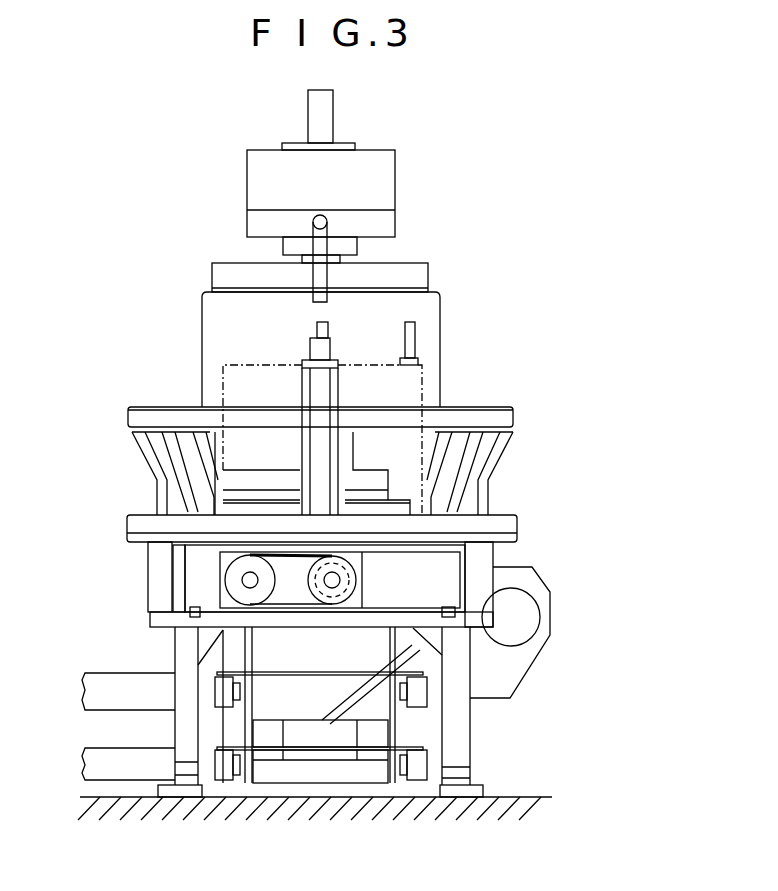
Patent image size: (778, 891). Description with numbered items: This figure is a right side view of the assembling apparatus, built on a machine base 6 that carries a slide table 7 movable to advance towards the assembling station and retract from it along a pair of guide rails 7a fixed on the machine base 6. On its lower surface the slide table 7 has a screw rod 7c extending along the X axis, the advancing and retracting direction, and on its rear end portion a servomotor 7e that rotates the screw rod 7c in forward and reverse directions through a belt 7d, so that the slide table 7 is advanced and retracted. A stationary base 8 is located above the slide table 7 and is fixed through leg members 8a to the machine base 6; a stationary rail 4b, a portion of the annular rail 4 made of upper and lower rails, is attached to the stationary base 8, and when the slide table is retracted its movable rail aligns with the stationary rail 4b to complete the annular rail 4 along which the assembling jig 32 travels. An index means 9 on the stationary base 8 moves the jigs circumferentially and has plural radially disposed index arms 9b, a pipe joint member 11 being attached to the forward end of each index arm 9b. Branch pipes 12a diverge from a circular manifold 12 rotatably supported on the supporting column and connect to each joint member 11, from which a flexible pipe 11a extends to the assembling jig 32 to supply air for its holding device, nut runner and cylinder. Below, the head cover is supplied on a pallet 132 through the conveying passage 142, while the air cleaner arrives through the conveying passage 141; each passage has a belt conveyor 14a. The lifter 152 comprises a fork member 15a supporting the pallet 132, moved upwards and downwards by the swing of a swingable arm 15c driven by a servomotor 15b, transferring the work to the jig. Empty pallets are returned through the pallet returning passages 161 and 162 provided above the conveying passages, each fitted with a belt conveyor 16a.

The annular rail 4 is at (505, 405).
The stationary rail 4b is at (467, 418).
The machine base 6 is at (150, 618).
The slide table 7 is at (453, 587).
The guide rails 7a is at (190, 614).
The screw rod 7c is at (252, 582).
The belt 7d is at (322, 600).
The servomotor 7e is at (360, 580).
The stationary base 8 is at (130, 535).
The leg members 8a is at (158, 577).
The index means 9 is at (442, 262).
The index arms 9b is at (178, 447).
The pipe joint member 11 is at (306, 357).
The flexible pipe 11a is at (328, 332).
The circular manifold 12 is at (388, 178).
The branch pipes 12a is at (315, 220).
The assembling jig 32 is at (223, 375).
The pallet 132 is at (325, 718).
The conveying passage 141 is at (100, 747).
The conveying passage 142 is at (327, 766).
The belt conveyor 14a is at (223, 770).
The fork member 15a is at (408, 768).
The servomotor 15b is at (520, 632).
The swingable arm 15c is at (378, 745).
The lifter 152 is at (528, 673).
The pallet returning passage 161 is at (105, 672).
The pallet returning passage 162 is at (432, 697).
The belt conveyor 16a is at (220, 692).